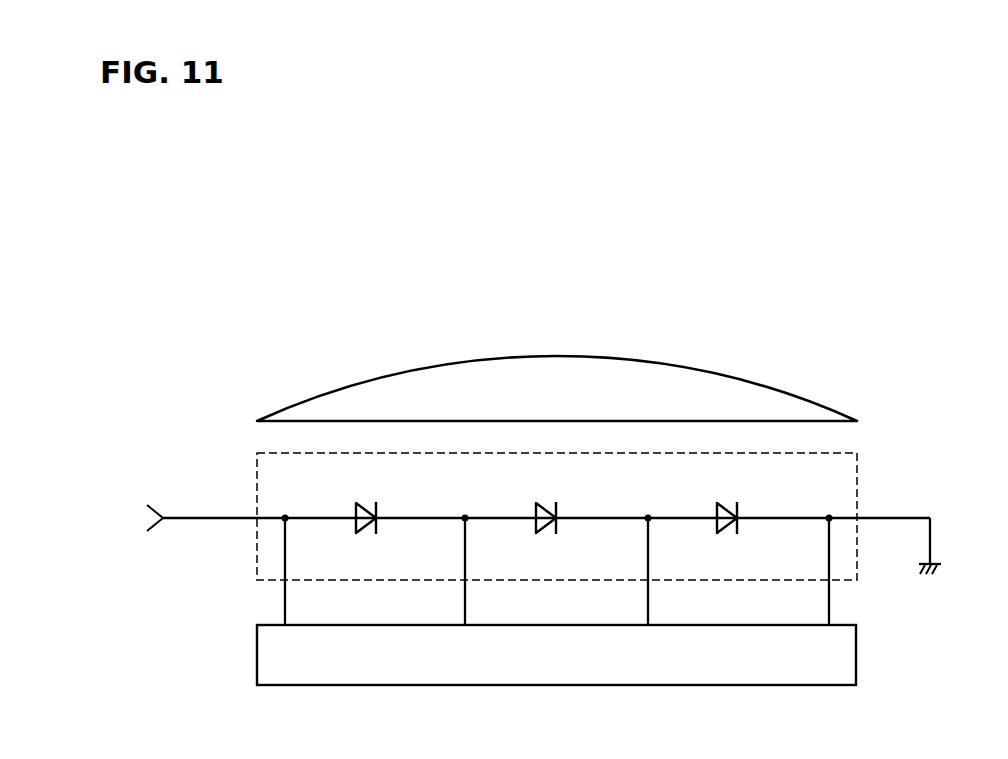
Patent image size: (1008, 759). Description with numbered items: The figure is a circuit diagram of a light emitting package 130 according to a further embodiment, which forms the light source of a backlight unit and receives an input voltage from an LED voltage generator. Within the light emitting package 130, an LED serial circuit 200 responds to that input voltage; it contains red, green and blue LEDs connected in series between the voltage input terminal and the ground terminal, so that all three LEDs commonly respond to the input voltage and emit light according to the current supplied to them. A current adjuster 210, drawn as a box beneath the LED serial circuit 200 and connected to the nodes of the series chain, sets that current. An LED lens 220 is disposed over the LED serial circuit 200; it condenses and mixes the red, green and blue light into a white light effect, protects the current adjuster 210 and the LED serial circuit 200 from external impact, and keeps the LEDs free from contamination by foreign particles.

The light emitting package 130 is at (181, 266).
The LED serial circuit 200 is at (858, 480).
The current adjuster 210 is at (857, 652).
The LED lens 220 is at (767, 405).